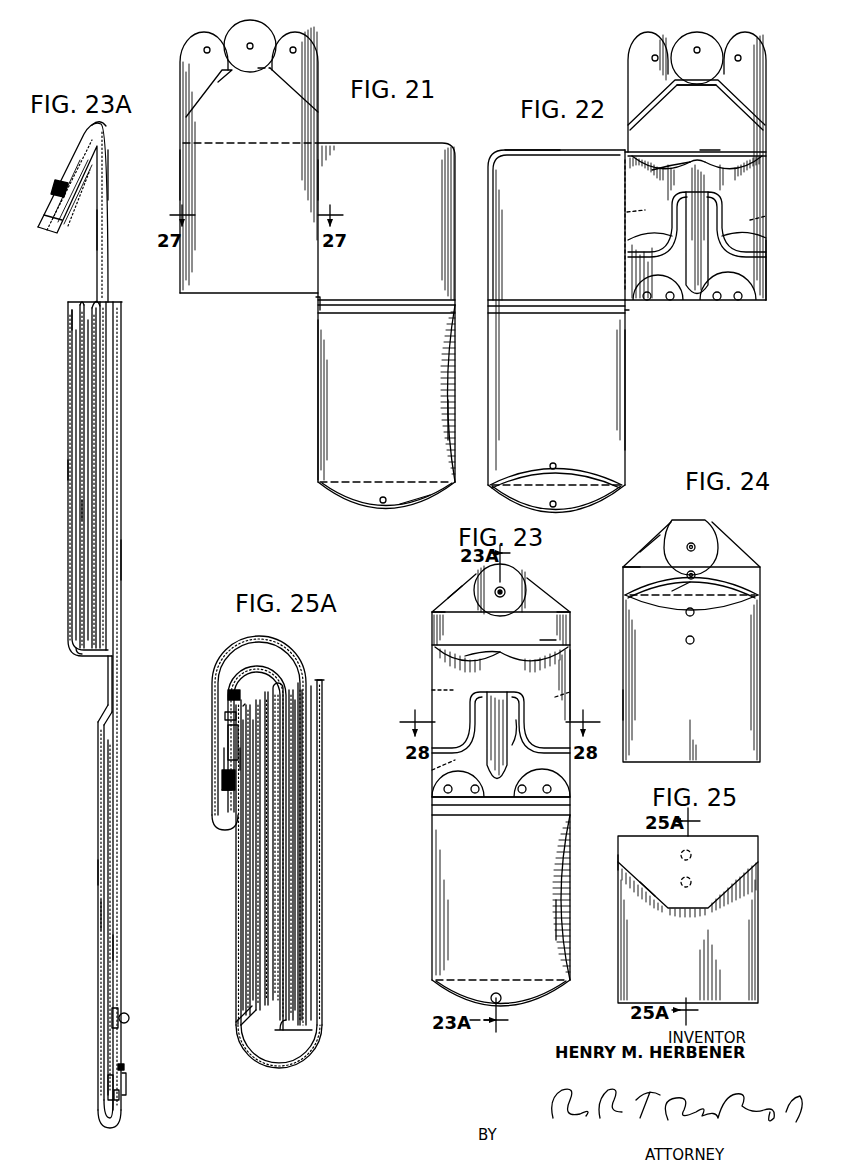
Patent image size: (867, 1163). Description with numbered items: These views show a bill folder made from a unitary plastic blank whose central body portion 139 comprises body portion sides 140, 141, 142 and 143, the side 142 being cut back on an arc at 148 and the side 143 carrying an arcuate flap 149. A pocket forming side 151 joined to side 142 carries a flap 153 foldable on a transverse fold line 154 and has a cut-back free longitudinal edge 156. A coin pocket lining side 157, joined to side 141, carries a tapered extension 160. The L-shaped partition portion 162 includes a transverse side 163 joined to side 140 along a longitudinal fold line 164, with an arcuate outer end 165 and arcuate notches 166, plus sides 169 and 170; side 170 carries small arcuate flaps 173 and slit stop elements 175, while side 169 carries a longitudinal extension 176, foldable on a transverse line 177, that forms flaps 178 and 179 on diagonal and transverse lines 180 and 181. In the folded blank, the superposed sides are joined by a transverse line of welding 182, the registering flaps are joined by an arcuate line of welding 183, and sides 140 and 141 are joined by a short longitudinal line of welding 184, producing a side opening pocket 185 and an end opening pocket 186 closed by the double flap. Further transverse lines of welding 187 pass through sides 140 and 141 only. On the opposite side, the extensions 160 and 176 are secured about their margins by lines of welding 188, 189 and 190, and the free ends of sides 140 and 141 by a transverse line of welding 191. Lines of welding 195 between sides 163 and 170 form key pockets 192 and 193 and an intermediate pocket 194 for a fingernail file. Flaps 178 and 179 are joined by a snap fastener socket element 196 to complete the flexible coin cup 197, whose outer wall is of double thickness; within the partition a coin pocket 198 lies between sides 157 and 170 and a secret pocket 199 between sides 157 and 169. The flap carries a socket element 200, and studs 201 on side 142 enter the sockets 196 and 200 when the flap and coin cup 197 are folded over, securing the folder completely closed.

In FIG. 21, the body portion 139 is at (320, 382).
In FIG. 22, the body portion 139 is at (629, 389).
In FIG. 23, the body portion 139 is at (430, 941).
In FIG. 24, the body portion 139 is at (621, 701).
In FIG. 23A, the body portion 139 is at (124, 564).
In FIG. 25A, the body portion 139 is at (323, 906).
In FIG. 22, the body portion side 140 is at (561, 245).
In FIG. 23A, the body portion side 140 is at (122, 386).
In FIG. 25A, the body portion side 140 is at (325, 771).
In FIG. 21, the body portion side 141 is at (394, 233).
In FIG. 23A, the body portion side 141 is at (114, 409).
In FIG. 25A, the body portion side 141 is at (325, 796).
In FIG. 22, the body portion side 142 is at (563, 411).
In FIG. 24, the body portion side 142 is at (703, 696).
In FIG. 25, the body portion side 142 is at (630, 971).
In FIG. 23A, the body portion side 142 is at (118, 861).
In FIG. 25A, the body portion side 142 is at (238, 984).
In FIG. 21, the body portion side 143 is at (448, 372).
In FIG. 23, the body portion side 143 is at (560, 891).
In FIG. 23A, the body portion side 143 is at (108, 887).
In FIG. 25A, the body portion side 143 is at (251, 953).
In FIG. 22, the arcuate cut-back 148 is at (592, 483).
In FIG. 24, the arcuate cut-back 148 is at (720, 606).
In FIG. 22, the arcuate flap 149 is at (596, 501).
In FIG. 24, the arcuate flap 149 is at (716, 591).
In FIG. 23A, the arcuate flap 149 is at (119, 1113).
In FIG. 25A, the arcuate flap 149 is at (228, 716).
In FIG. 21, the pocket forming side 151 is at (384, 393).
In FIG. 23, the pocket forming side 151 is at (498, 908).
In FIG. 23A, the pocket forming side 151 is at (100, 914).
In FIG. 25A, the pocket forming side 151 is at (256, 929).
In FIG. 21, the flap 153 is at (355, 506).
In FIG. 23, the flap 153 is at (525, 1001).
In FIG. 23A, the flap 153 is at (125, 1099).
In FIG. 25A, the flap 153 is at (226, 689).
In FIG. 21, the transverse fold line 154 is at (365, 482).
In FIG. 21, the free longitudinal edge 156 is at (440, 415).
In FIG. 23, the free longitudinal edge 156 is at (556, 920).
In FIG. 23A, the coin pocket lining side 157 is at (90, 477).
In FIG. 25A, the coin pocket lining side 157 is at (291, 839).
In FIG. 22, the tapered extension 160 is at (708, 121).
In FIG. 23, the tapered extension 160 is at (450, 629).
In FIG. 23A, the tapered extension 160 is at (97, 231).
In FIG. 25A, the tapered extension 160 is at (223, 656).
In FIG. 21, the partition portion 162 is at (182, 179).
In FIG. 22, the partition portion 162 is at (762, 293).
In FIG. 23, the partition portion 162 is at (556, 681).
In FIG. 23A, the partition portion 162 is at (68, 471).
In FIG. 25A, the partition portion 162 is at (299, 939).
In FIG. 22, the transverse side 163 is at (681, 190).
In FIG. 23, the transverse side 163 is at (513, 688).
In FIG. 23A, the transverse side 163 is at (70, 526).
In FIG. 25A, the transverse side 163 is at (266, 879).
In FIG. 22, the longitudinal fold line 164 is at (628, 184).
In FIG. 22, the outer end 165 is at (735, 166).
In FIG. 23, the outer end 165 is at (465, 656).
In FIG. 23A, the outer end 165 is at (70, 321).
In FIG. 22, the arcuate notches 166 is at (746, 294).
In FIG. 23, the arcuate notches 166 is at (445, 776).
In FIG. 21, the partition side 169 is at (257, 223).
In FIG. 23A, the partition side 169 is at (96, 449).
In FIG. 25A, the partition side 169 is at (305, 819).
In FIG. 22, the partition side 170 is at (652, 170).
In FIG. 23A, the partition side 170 is at (82, 501).
In FIG. 25A, the partition side 170 is at (281, 859).
In FIG. 22, the arcuate flaps 173 is at (745, 156).
In FIG. 23, the arcuate flaps 173 is at (480, 651).
In FIG. 23A, the arcuate flaps 173 is at (70, 313).
In FIG. 25A, the arcuate flaps 173 is at (286, 686).
In FIG. 22, the stop elements 175 is at (640, 296).
In FIG. 23, the stop elements 175 is at (560, 794).
In FIG. 21, the longitudinal extension 176 is at (259, 123).
In FIG. 25, the longitudinal extension 176 is at (720, 851).
In FIG. 23A, the longitudinal extension 176 is at (108, 231).
In FIG. 25A, the longitudinal extension 176 is at (236, 646).
In FIG. 21, the transverse fold line 177 is at (250, 143).
In FIG. 21, the flap 178 is at (186, 59).
In FIG. 22, the flap 178 is at (640, 41).
In FIG. 23, the flap 178 is at (460, 601).
In FIG. 24, the flap 178 is at (645, 541).
In FIG. 23A, the flap 178 is at (75, 146).
In FIG. 25A, the flap 178 is at (225, 759).
In FIG. 21, the flap 179 is at (247, 28).
In FIG. 22, the flap 179 is at (695, 32).
In FIG. 23, the flap 179 is at (526, 588).
In FIG. 24, the flap 179 is at (697, 522).
In FIG. 23A, the flap 179 is at (48, 216).
In FIG. 25A, the flap 179 is at (228, 733).
In FIG. 21, the diagonal fold line 180 is at (302, 100).
In FIG. 21, the transverse fold line 181 is at (253, 72).
In FIG. 21, the transverse line of welding 182 is at (352, 314).
In FIG. 22, the transverse line of welding 182 is at (575, 316).
In FIG. 23, the transverse line of welding 182 is at (525, 823).
In FIG. 23A, the transverse line of welding 182 is at (112, 706).
In FIG. 25A, the transverse line of welding 182 is at (240, 1031).
In FIG. 21, the arcuate line of welding 183 is at (405, 508).
In FIG. 22, the arcuate line of welding 183 is at (573, 509).
In FIG. 24, the arcuate line of welding 183 is at (672, 591).
In FIG. 23A, the arcuate line of welding 183 is at (126, 1069).
In FIG. 21, the longitudinal line of welding 184 is at (316, 303).
In FIG. 22, the longitudinal line of welding 184 is at (625, 311).
In FIG. 23, the longitudinal line of welding 184 is at (432, 816).
In FIG. 21, the side opening pocket 185 is at (448, 396).
In FIG. 23, the side opening pocket 185 is at (563, 873).
In FIG. 25, the side opening pocket 185 is at (618, 863).
In FIG. 23A, the side opening pocket 185 is at (98, 871).
In FIG. 25A, the side opening pocket 185 is at (251, 901).
In FIG. 21, the end opening pocket 186 is at (330, 493).
In FIG. 22, the end opening pocket 186 is at (512, 487).
In FIG. 23A, the end opening pocket 186 is at (119, 947).
In FIG. 25A, the end opening pocket 186 is at (241, 871).
In FIG. 21, the transverse line of welding 187 is at (395, 301).
In FIG. 22, the transverse line of welding 187 is at (532, 311).
In FIG. 23, the transverse line of welding 187 is at (490, 809).
In FIG. 23A, the transverse line of welding 187 is at (118, 681).
In FIG. 25A, the transverse line of welding 187 is at (215, 678).
In FIG. 22, the line of welding 188 is at (633, 141).
In FIG. 23, the line of welding 188 is at (432, 621).
In FIG. 24, the line of welding 188 is at (623, 576).
In FIG. 22, the line of welding 189 is at (645, 90).
In FIG. 22, the line of welding 190 is at (705, 81).
In FIG. 23A, the line of welding 190 is at (108, 131).
In FIG. 22, the transverse line of welding 191 is at (535, 150).
In FIG. 23A, the transverse line of welding 191 is at (122, 313).
In FIG. 25A, the transverse line of welding 191 is at (325, 681).
In FIG. 22, the key pocket 192 is at (645, 216).
In FIG. 23, the key pocket 192 is at (450, 691).
In FIG. 25A, the key pocket 192 is at (230, 706).
In FIG. 22, the key pocket 193 is at (650, 269).
In FIG. 23, the key pocket 193 is at (435, 769).
In FIG. 22, the intermediate longitudinal pocket 194 is at (702, 216).
In FIG. 23, the intermediate longitudinal pocket 194 is at (506, 716).
In FIG. 23A, the intermediate longitudinal pocket 194 is at (76, 383).
In FIG. 25A, the intermediate longitudinal pocket 194 is at (273, 919).
In FIG. 22, the lines of welding 195 is at (660, 240).
In FIG. 23, the lines of welding 195 is at (512, 745).
In FIG. 23A, the lines of welding 195 is at (76, 656).
In FIG. 25A, the lines of welding 195 is at (272, 1021).
In FIG. 23, the snap fastener socket element 196 is at (506, 593).
In FIG. 24, the snap fastener socket element 196 is at (697, 546).
In FIG. 25, the snap fastener socket element 196 is at (682, 885).
In FIG. 23A, the snap fastener socket element 196 is at (58, 179).
In FIG. 25A, the snap fastener socket element 196 is at (222, 773).
In FIG. 23, the coin cup 197 is at (466, 579).
In FIG. 24, the coin cup 197 is at (641, 553).
In FIG. 25, the coin cup 197 is at (650, 879).
In FIG. 23A, the coin cup 197 is at (110, 156).
In FIG. 25A, the coin cup 197 is at (216, 773).
In FIG. 22, the coin pocket 198 is at (712, 146).
In FIG. 23, the coin pocket 198 is at (549, 633).
In FIG. 23A, the coin pocket 198 is at (86, 300).
In FIG. 25A, the coin pocket 198 is at (301, 751).
In FIG. 21, the secret pocket 199 is at (321, 183).
In FIG. 23A, the secret pocket 199 is at (95, 441).
In FIG. 25A, the secret pocket 199 is at (291, 981).
In FIG. 24, the snap fastener socket element 200 is at (694, 579).
In FIG. 25, the snap fastener socket element 200 is at (682, 856).
In FIG. 23A, the snap fastener socket element 200 is at (128, 1086).
In FIG. 25A, the snap fastener socket element 200 is at (255, 690).
In FIG. 24, the snap fastener studs 201 is at (690, 616).
In FIG. 23A, the snap fastener studs 201 is at (129, 1018).
In FIG. 25A, the snap fastener studs 201 is at (240, 709).